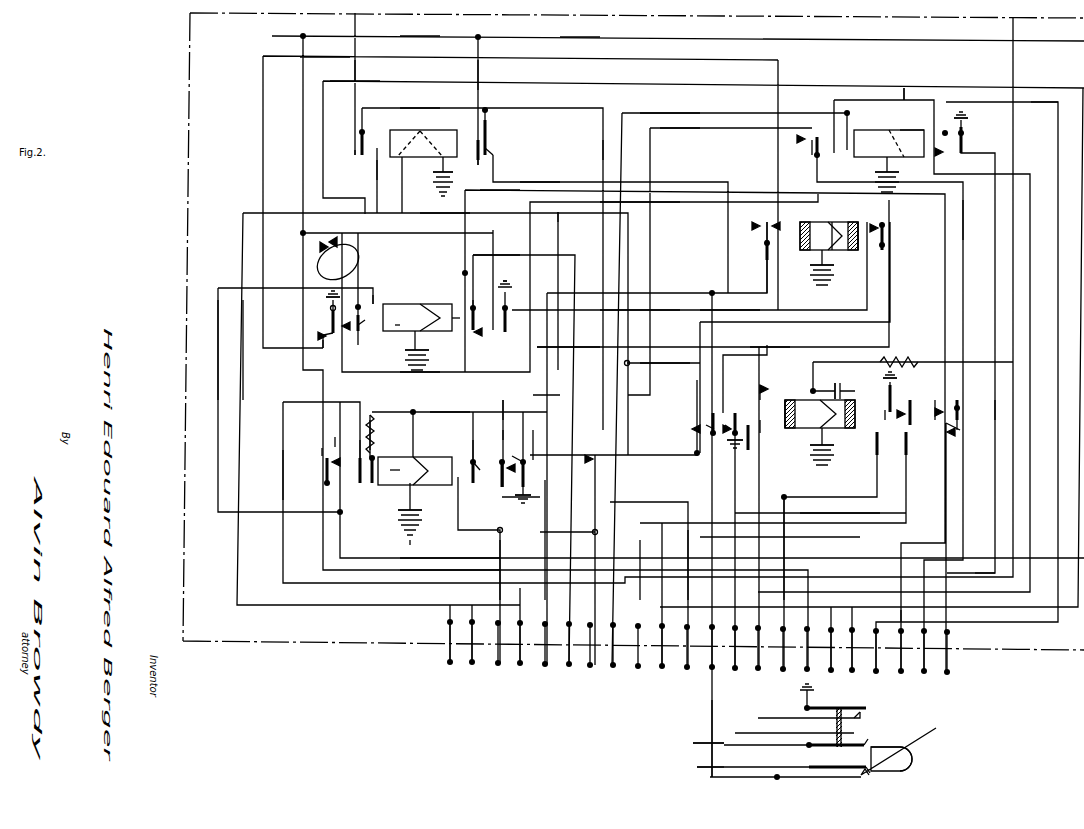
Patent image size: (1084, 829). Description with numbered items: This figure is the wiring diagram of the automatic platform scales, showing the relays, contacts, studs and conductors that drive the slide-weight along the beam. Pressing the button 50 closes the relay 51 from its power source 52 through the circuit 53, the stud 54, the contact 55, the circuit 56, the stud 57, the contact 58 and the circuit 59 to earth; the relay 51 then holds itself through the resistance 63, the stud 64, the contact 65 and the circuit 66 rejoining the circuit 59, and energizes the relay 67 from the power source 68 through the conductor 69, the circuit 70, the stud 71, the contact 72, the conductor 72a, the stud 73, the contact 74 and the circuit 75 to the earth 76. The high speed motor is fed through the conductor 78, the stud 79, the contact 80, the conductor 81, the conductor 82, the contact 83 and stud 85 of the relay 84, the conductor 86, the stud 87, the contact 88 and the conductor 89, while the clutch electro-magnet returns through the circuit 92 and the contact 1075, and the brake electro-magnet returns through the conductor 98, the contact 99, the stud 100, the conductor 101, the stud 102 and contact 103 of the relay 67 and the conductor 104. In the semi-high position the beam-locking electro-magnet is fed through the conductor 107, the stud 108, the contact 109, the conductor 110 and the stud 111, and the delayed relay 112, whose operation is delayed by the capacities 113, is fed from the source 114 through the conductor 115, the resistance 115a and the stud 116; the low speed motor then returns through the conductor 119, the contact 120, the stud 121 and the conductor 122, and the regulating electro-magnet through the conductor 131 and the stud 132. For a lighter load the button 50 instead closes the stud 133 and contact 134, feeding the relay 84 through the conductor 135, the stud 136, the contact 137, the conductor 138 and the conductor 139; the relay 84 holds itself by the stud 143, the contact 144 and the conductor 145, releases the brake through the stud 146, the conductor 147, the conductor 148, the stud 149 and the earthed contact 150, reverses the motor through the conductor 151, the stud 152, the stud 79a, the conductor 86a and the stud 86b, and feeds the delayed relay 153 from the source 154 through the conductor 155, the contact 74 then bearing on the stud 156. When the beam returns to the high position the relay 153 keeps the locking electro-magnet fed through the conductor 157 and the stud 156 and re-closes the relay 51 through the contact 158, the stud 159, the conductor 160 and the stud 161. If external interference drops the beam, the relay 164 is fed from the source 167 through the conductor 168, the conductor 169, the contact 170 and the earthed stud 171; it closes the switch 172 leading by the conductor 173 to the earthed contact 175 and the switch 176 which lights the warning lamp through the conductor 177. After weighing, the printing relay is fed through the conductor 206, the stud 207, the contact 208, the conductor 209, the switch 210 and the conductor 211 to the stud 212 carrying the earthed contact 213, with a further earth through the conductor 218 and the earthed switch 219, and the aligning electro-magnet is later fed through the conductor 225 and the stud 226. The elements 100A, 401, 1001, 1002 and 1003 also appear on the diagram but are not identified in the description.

The button 50 is at (896, 728).
The relay 51 is at (394, 470).
The power source 52 is at (420, 506).
The circuit 53 is at (714, 388).
The stud 54 is at (708, 400).
The contact 55 is at (716, 409).
The circuit 56 is at (740, 744).
The stud 57 is at (861, 775).
The contact 58 is at (850, 760).
The circuit 59 is at (696, 767).
The resistance 63 is at (376, 431).
The stud 64 is at (370, 466).
The contact 65 is at (358, 450).
The circuit 66 is at (588, 590).
The relay 67 is at (380, 160).
The power source 68 is at (444, 176).
The conductor 69 is at (390, 596).
The circuit 70 is at (498, 606).
The stud 71 is at (470, 458).
The contact 72 is at (464, 454).
The conductor 72a is at (926, 300).
The stud 73 is at (890, 224).
The contact 74 is at (887, 234).
The circuit 75 is at (504, 296).
The earth 76 is at (506, 282).
The conductor 78 is at (810, 568).
The stud 79 is at (336, 435).
The stud 79a is at (322, 454).
The contact 80 is at (324, 464).
The conductor 81 is at (636, 582).
The conductor 82 is at (1030, 605).
The contact 83 is at (362, 342).
The relay 84 is at (396, 330).
The stud 85 is at (356, 338).
The conductor 86 is at (480, 69).
The conductor 86a is at (429, 232).
The stud 86b is at (476, 308).
The stud 87 is at (486, 156).
The contact 88 is at (487, 134).
The conductor 89 is at (594, 531).
The circuit 92 is at (1052, 628).
The conductor 98 is at (494, 478).
The contact 99 is at (502, 464).
The stud 100 is at (492, 428).
The ground 100A is at (730, 433).
The conductor 101 is at (627, 404).
The stud 102 is at (360, 158).
The contact 103 is at (364, 132).
The conductor 104 is at (418, 108).
The conductor 107 is at (632, 430).
The stud 108 is at (748, 426).
The contact 109 is at (760, 398).
The conductor 110 is at (762, 380).
The stud 111 is at (494, 156).
The relay 112 is at (794, 410).
The capacities 113 is at (806, 384).
The source 114 is at (828, 442).
The conductor 115 is at (1018, 227).
The resistance 115a is at (903, 346).
The stud 116 is at (352, 150).
The conductor 119 is at (782, 630).
The contact 120 is at (878, 432).
The stud 121 is at (882, 406).
The conductor 122 is at (644, 530).
The conductor 131 is at (762, 447).
The stud 132 is at (762, 430).
The stud 133 is at (858, 716).
The contact 134 is at (808, 744).
The conductor 135 is at (466, 233).
The stud 136 is at (934, 398).
The contact 137 is at (912, 398).
The conductor 138 is at (750, 710).
The conductor 139 is at (693, 743).
The stud 143 is at (464, 330).
The contact 144 is at (430, 353).
The conductor 145 is at (550, 254).
The stud 146 is at (512, 456).
The conductor 147 is at (500, 420).
The conductor 148 is at (416, 372).
The stud 149 is at (328, 338).
The contact 150 is at (320, 308).
The conductor 151 is at (264, 498).
The stud 152 is at (378, 302).
The delayed relay 153 is at (834, 222).
The source 154 is at (832, 276).
The conductor 155 is at (528, 366).
The stud 156 is at (868, 222).
The conductor 157 is at (710, 382).
The contact 158 is at (762, 230).
The stud 159 is at (770, 244).
The conductor 160 is at (776, 146).
The stud 161 is at (320, 333).
The relay 164 is at (914, 130).
The source 167 is at (888, 164).
The conductor 168 is at (618, 239).
The conductor 169 is at (902, 476).
The contact 170 is at (906, 392).
The stud 171 is at (886, 376).
The switch 172 is at (824, 150).
The conductor 173 is at (778, 717).
The contact 175 is at (832, 694).
The switch 176 is at (870, 706).
The conductor 177 is at (1056, 464).
The conductor 206 is at (901, 637).
The stud 207 is at (972, 435).
The contact 208 is at (957, 408).
The conductor 209 is at (958, 210).
The switch 210 is at (812, 142).
The conductor 211 is at (650, 260).
The stud 212 is at (530, 456).
The contact 213 is at (524, 470).
The conductor 218 is at (952, 630).
The earthed switch 219 is at (966, 138).
The conductor 225 is at (980, 528).
The stud 226 is at (984, 420).
The conductor 401 is at (558, 210).
The conductor 1001 is at (676, 366).
The conductor 1002 is at (770, 343).
The contact 1003 is at (708, 412).
The contact 1075 is at (504, 322).